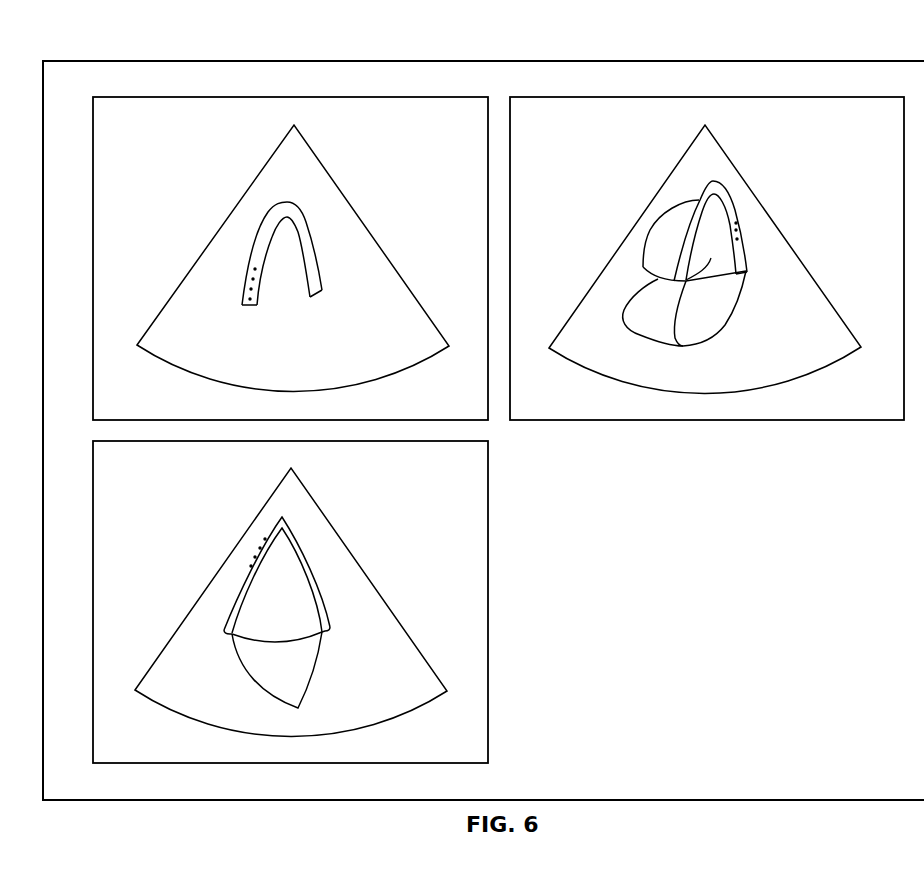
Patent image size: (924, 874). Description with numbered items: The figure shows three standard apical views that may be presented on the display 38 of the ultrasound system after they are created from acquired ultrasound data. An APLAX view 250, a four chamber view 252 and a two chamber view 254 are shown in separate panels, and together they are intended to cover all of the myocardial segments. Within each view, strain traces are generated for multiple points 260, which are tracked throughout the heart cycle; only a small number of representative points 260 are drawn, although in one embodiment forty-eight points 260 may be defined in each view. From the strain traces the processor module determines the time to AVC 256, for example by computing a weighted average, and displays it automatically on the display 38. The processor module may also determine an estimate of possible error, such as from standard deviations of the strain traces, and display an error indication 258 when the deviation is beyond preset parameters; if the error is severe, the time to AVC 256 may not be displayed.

The display 38 is at (89, 61).
The APLAX view 250 is at (471, 128).
The four chamber view 252 is at (887, 127).
The two chamber view 254 is at (471, 479).
The time to AVC 256 is at (789, 667).
The error indication 258 is at (747, 697).
The points 260 is at (252, 270).